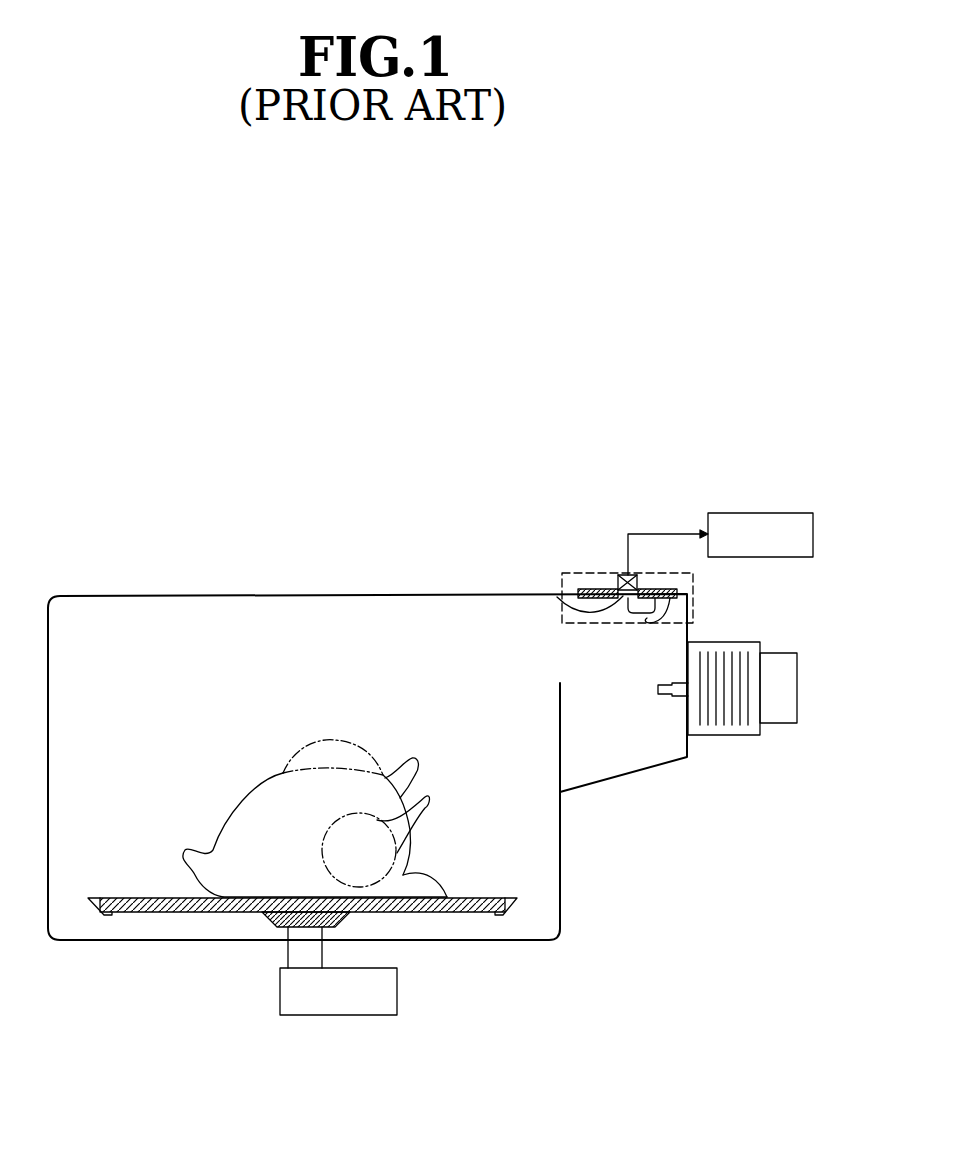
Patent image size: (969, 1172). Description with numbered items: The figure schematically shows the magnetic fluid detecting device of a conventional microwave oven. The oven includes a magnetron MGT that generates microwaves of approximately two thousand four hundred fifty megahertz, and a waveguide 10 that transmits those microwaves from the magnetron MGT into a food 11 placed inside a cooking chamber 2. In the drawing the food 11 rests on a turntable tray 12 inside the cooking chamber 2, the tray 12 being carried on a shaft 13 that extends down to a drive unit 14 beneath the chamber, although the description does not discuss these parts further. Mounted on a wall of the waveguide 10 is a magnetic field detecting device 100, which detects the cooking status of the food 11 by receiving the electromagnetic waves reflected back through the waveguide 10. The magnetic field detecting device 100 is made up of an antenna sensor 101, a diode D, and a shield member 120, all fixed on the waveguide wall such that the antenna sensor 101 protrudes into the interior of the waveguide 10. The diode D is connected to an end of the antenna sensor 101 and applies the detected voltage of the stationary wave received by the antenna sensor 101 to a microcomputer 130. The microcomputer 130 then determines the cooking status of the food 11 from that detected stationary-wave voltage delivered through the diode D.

The cooking chamber 2 is at (118, 620).
The waveguide 10 is at (582, 640).
The food 11 is at (407, 870).
The turntable tray 12 is at (123, 905).
The rotating shaft 13 is at (303, 947).
The turntable motor 14 is at (288, 988).
The magnetic field detecting device 100 is at (577, 575).
The antenna sensor 101 is at (670, 589).
The shield member 120 is at (598, 589).
The microcomputer 130 is at (763, 513).
The diode D is at (557, 597).
The magnetron MGT is at (743, 723).